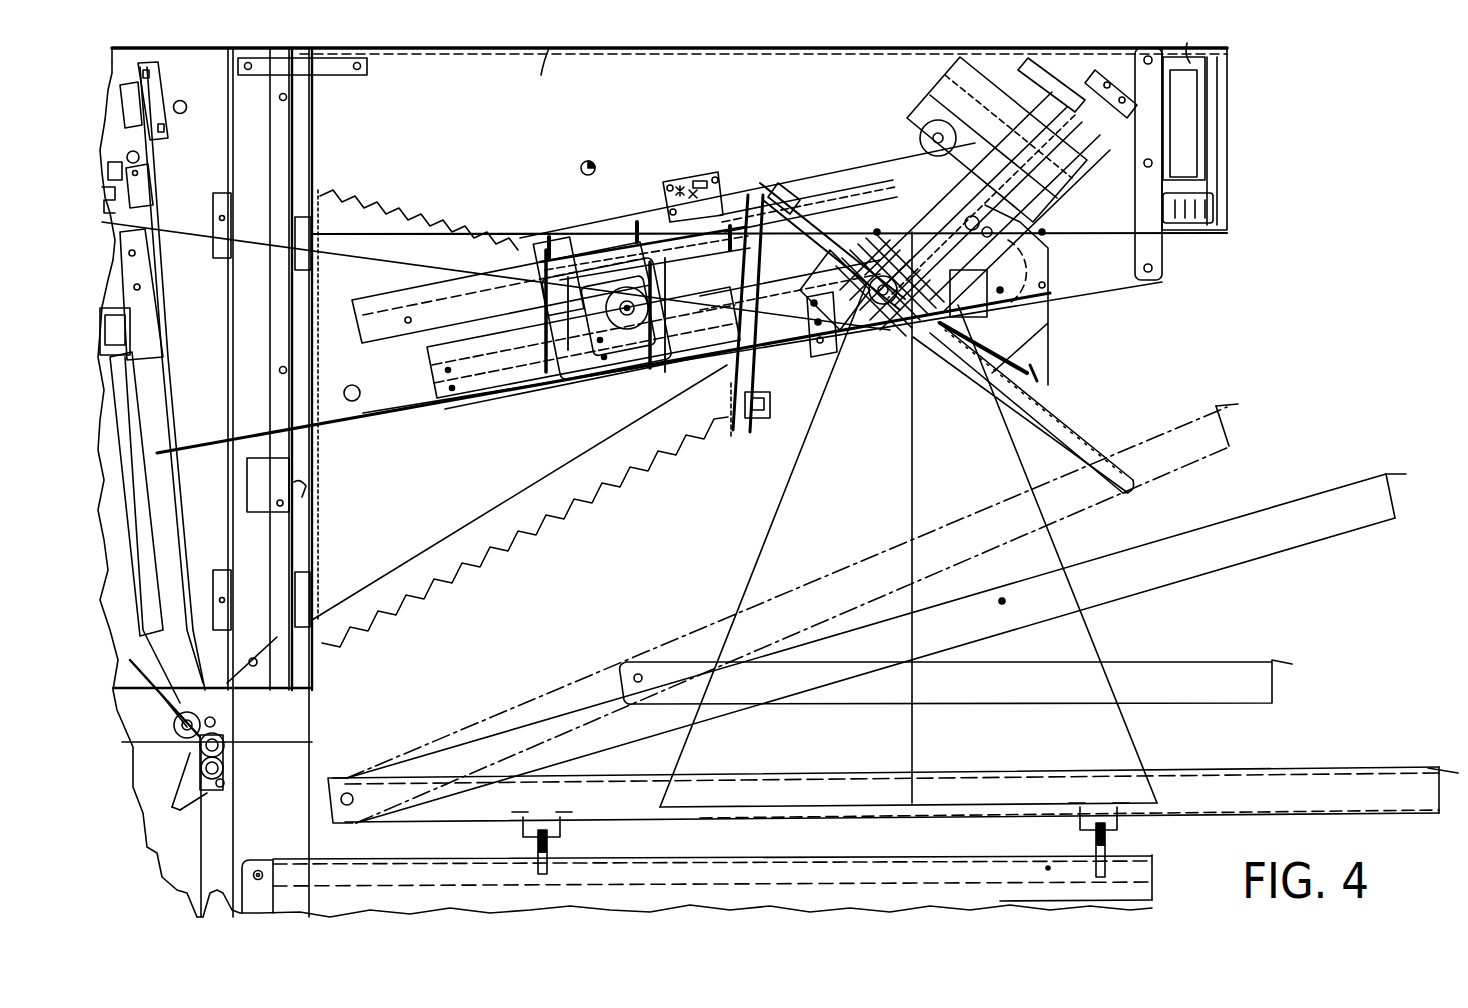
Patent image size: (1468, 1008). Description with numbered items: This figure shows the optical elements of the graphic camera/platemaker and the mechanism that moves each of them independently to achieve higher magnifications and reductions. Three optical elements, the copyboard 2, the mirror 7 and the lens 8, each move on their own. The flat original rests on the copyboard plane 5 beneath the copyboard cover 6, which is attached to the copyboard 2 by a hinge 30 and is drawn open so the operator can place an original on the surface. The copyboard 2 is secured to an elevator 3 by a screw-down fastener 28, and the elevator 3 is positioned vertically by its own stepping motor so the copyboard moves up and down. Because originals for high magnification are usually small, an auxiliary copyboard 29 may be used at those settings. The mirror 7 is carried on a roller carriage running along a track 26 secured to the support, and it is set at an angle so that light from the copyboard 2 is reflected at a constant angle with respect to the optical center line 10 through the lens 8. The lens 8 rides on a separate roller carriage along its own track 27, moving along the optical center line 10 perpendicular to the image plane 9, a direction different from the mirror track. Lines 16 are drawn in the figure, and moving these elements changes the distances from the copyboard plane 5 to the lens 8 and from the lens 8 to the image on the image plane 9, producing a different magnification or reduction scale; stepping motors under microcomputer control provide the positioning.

The copyboard 2 is at (1369, 787).
The elevator 3 is at (272, 897).
The copyboard plane 5 is at (1302, 763).
The copyboard cover 6 is at (1312, 507).
The mirror 7 is at (1067, 427).
The lens 8 is at (792, 303).
The image plane 9 is at (140, 267).
The optical center line 10 is at (375, 413).
The pivot reference lines 16 is at (782, 498).
The track 26 is at (1057, 232).
The track 27 is at (517, 367).
The screw-down fastener 28 is at (547, 847).
The auxiliary copyboard 29 is at (1237, 671).
The hinge 30 is at (348, 793).